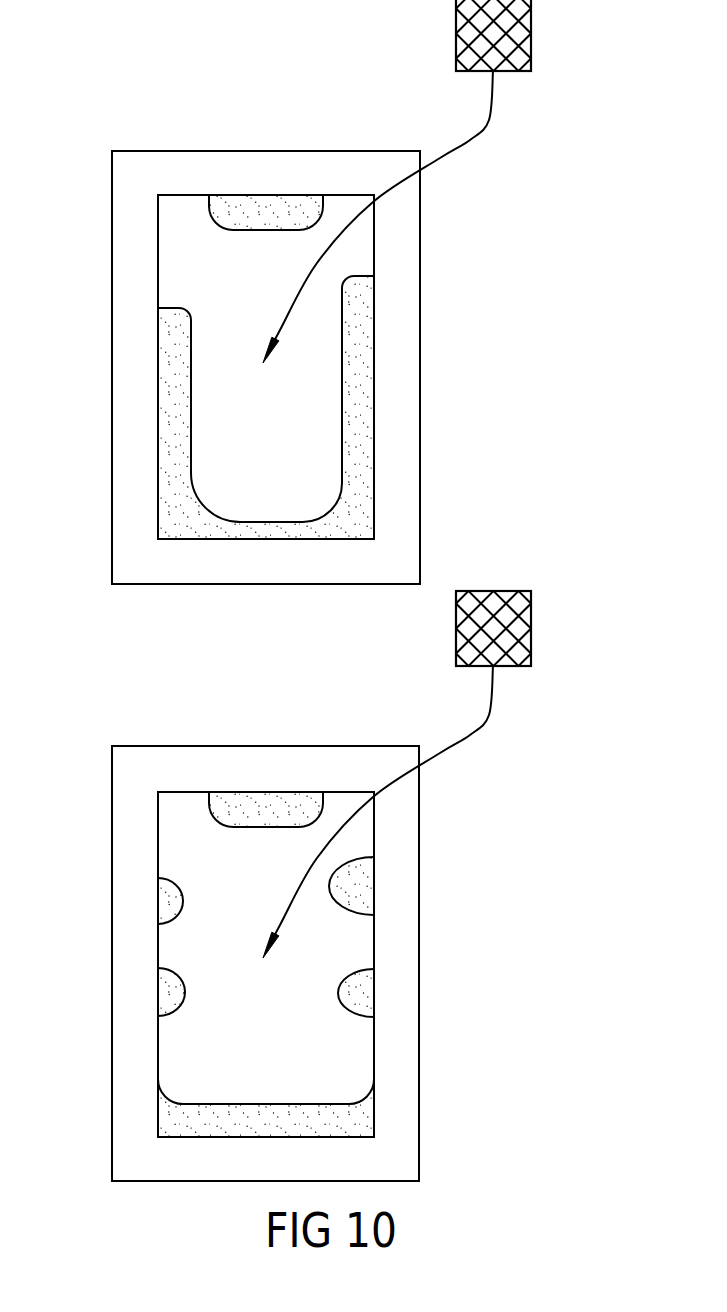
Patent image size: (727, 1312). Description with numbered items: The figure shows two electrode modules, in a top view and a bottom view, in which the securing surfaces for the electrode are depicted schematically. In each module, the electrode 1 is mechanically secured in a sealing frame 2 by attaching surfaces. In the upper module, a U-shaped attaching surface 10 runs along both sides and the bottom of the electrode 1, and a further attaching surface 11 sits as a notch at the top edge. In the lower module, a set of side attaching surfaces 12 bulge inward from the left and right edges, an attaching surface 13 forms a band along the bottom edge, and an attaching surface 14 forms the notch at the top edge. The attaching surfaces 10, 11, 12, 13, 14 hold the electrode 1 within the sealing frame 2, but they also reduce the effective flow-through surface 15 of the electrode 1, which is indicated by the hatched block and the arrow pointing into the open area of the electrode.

The electrode 1 is at (177, 228).
The sealing frame 2 is at (130, 402).
The attaching surface 10 is at (362, 372).
The attaching surface 11 is at (265, 205).
The attaching surface 12 is at (358, 882).
The attaching surface 13 is at (320, 1115).
The attaching surface 14 is at (267, 802).
The effective flow-through surface 15 is at (527, 33).